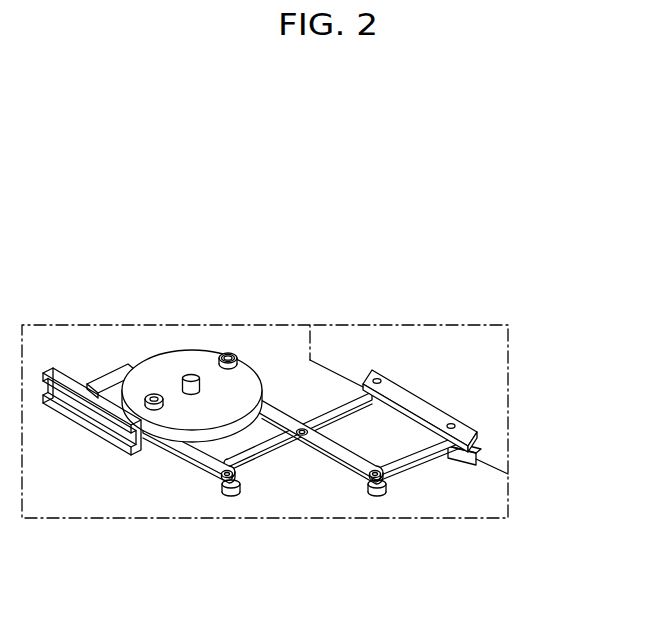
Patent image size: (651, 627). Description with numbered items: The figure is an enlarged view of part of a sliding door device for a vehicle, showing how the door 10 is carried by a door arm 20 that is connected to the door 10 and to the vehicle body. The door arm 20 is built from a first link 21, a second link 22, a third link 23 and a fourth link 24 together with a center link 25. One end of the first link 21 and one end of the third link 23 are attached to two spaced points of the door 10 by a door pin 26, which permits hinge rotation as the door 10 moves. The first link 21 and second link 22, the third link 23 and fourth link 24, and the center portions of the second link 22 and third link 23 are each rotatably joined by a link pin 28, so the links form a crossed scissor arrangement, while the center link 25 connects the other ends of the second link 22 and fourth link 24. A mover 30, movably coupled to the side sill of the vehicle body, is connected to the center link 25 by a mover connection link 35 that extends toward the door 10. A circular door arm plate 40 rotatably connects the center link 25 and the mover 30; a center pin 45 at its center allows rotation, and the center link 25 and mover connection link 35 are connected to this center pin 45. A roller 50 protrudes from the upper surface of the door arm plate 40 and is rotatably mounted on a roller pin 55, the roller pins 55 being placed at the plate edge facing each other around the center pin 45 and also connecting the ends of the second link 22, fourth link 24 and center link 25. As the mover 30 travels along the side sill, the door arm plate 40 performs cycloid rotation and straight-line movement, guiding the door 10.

The door 10 is at (425, 355).
The door arm 20 is at (568, 427).
The first link 21 is at (415, 460).
The second link 22 is at (335, 455).
The third link 23 is at (267, 460).
The fourth link 24 is at (202, 458).
The center link 25 is at (506, 515).
The door pin 26 is at (448, 413).
The link pin 28 is at (376, 483).
The mover 30 is at (48, 372).
The mover connection link 35 is at (106, 373).
The door arm plate 40 is at (178, 430).
The center pin 45 is at (189, 376).
The roller 50 is at (236, 355).
The roller pin 55 is at (226, 352).